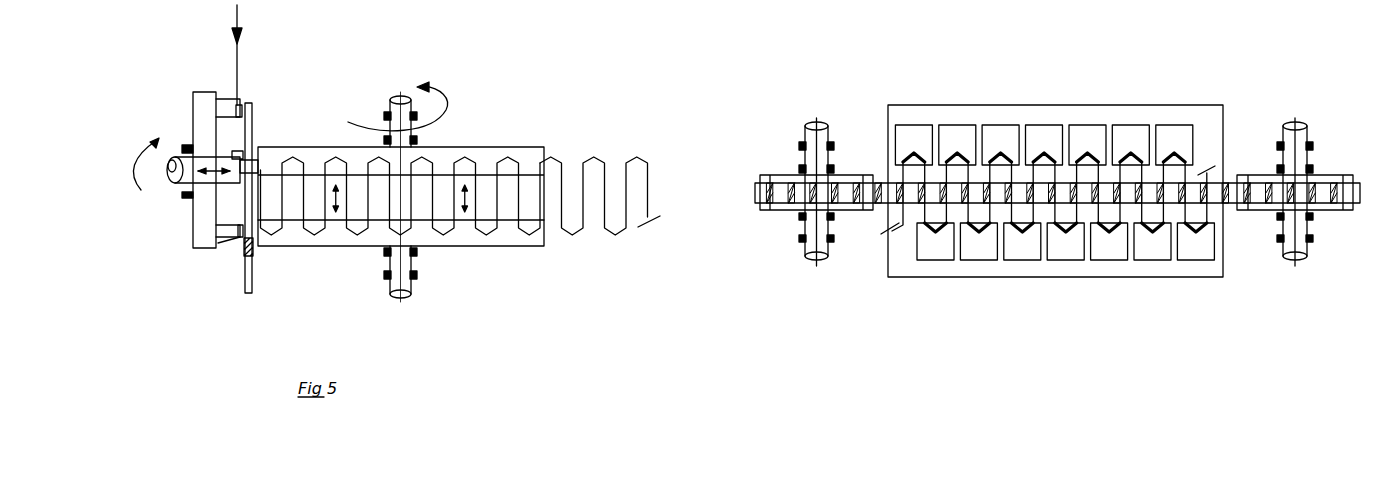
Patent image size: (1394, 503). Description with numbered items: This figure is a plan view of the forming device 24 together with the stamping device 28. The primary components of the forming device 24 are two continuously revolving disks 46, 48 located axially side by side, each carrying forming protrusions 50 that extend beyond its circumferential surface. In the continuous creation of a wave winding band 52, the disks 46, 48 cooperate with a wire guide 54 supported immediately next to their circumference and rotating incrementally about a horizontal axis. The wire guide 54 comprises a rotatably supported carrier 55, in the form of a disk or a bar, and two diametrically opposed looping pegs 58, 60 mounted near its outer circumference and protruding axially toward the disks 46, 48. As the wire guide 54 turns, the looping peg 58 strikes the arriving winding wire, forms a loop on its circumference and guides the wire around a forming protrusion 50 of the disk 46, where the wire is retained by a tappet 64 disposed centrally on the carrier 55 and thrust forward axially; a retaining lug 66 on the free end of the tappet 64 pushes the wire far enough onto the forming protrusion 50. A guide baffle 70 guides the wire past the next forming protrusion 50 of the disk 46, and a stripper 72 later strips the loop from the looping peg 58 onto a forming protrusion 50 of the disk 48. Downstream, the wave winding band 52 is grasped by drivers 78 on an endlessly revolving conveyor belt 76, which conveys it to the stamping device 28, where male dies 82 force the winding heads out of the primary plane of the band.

The forming device 24 is at (458, 147).
The stamping device 28 is at (1203, 104).
The disk 46 is at (500, 152).
The disk 48 is at (513, 240).
The forming protrusions 50 is at (336, 165).
The wave winding band 52 is at (648, 177).
The wire guide 54 is at (196, 248).
The carrier 55 is at (203, 110).
The looping peg 58 is at (228, 105).
The looping peg 60 is at (222, 243).
The tappet 64 is at (212, 178).
The retaining lug 66 is at (232, 152).
The guide baffle 70 is at (248, 118).
The stripper 72 is at (244, 250).
The conveyor belt 76 is at (868, 195).
The drivers 78 is at (897, 183).
The male dies 82 is at (1007, 137).